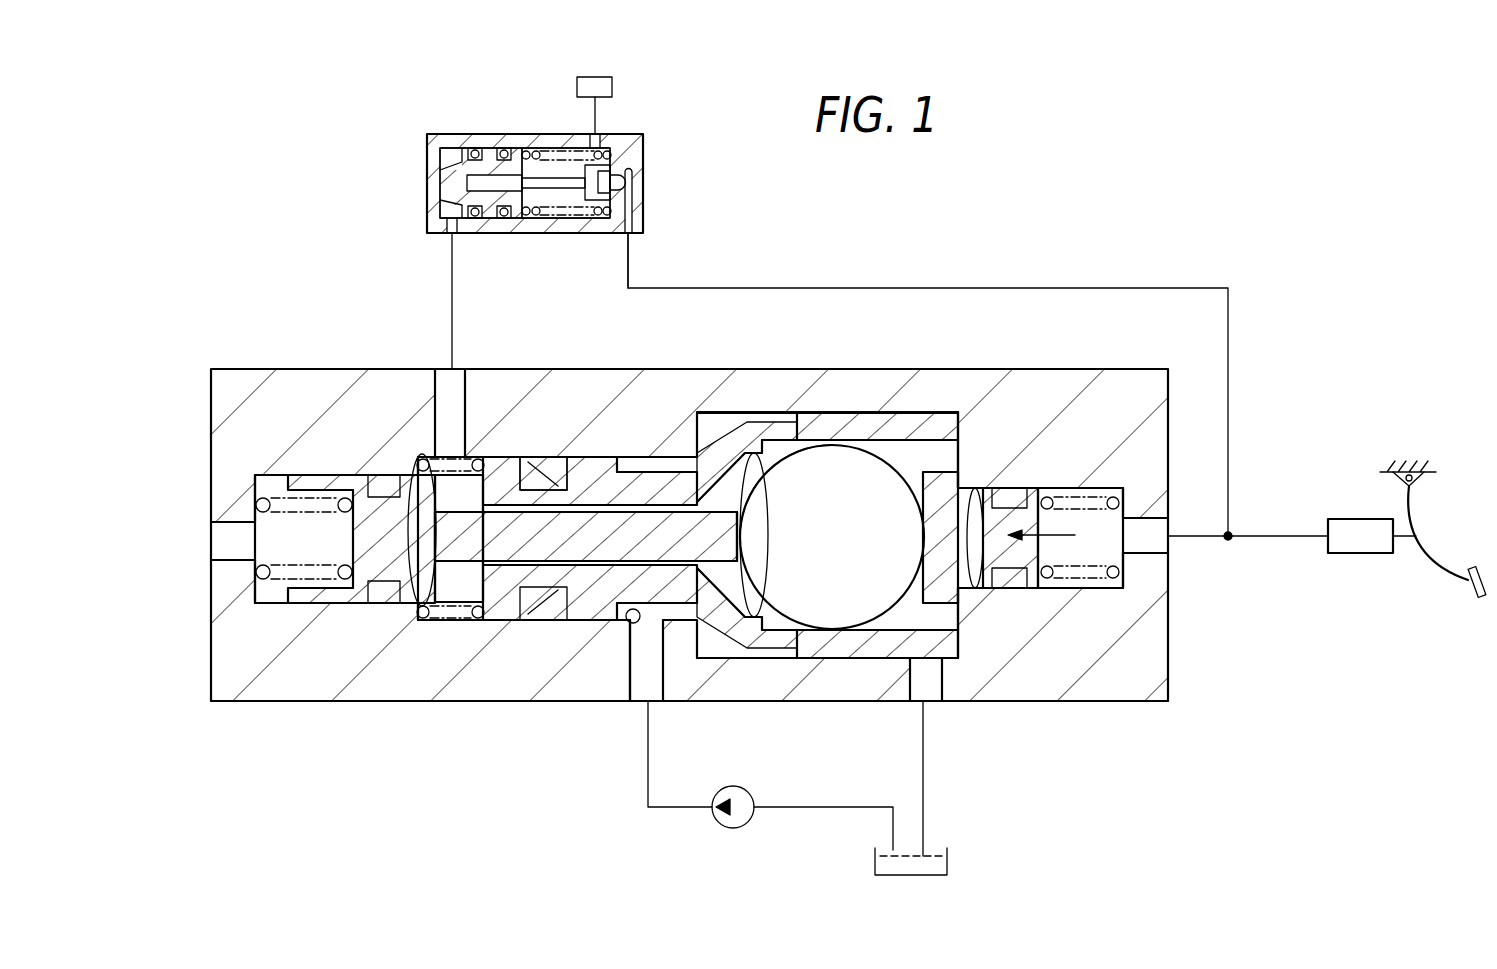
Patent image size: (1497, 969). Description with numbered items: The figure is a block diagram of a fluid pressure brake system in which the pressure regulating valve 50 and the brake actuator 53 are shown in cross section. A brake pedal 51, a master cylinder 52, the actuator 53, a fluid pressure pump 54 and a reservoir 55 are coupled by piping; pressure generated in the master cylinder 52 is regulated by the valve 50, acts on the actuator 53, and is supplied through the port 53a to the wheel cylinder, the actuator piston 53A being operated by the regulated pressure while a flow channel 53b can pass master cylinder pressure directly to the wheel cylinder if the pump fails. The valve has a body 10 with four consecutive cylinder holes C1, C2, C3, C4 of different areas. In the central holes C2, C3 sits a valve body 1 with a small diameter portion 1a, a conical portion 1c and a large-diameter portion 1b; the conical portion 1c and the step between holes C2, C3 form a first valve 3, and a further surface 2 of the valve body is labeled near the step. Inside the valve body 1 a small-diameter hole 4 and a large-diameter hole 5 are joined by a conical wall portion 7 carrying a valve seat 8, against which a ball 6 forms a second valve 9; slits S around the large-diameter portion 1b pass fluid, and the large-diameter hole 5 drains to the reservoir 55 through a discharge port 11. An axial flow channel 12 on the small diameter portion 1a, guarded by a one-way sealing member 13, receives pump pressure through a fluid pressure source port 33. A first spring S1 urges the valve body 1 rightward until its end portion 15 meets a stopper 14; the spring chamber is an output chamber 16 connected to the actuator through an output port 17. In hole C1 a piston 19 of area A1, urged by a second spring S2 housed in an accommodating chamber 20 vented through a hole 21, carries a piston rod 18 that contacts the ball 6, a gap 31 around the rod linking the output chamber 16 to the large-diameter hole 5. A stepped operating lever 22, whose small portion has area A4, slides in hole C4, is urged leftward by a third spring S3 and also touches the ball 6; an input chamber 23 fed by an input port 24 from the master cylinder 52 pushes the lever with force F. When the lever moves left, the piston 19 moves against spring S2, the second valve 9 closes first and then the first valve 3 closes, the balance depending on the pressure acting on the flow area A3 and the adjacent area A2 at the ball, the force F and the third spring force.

The valve body 1 is at (604, 464).
The small diameter portion 1a is at (580, 623).
The large-diameter portion 1b is at (780, 643).
The conical portion 1c is at (727, 660).
The conical valve surface 2 is at (672, 465).
The first valve 3 is at (697, 480).
The small-diameter hole 4 is at (507, 618).
The large-diameter hole 5 is at (897, 620).
The ball 6 is at (843, 457).
The conical wall portion 7 is at (735, 448).
The valve seat 8 is at (790, 435).
The second valve 9 is at (830, 440).
The body 10 is at (250, 673).
The discharge port 11 is at (930, 682).
The flow channel 12 is at (530, 618).
The sealing member 13 is at (545, 458).
The stopper 14 is at (978, 432).
The end portion 15 is at (977, 593).
The output chamber 16 is at (443, 617).
The output port 17 is at (443, 382).
The piston rod 18 is at (585, 458).
The piston 19 is at (405, 473).
The accommodating chamber 20 is at (270, 486).
The hole 21 is at (222, 540).
The operating lever 22 is at (963, 493).
The input chamber 23 is at (1105, 555).
The input port 24 is at (1160, 527).
The gap 31 is at (528, 617).
The fluid pressure source port 33 is at (645, 693).
The pressure regulating valve 50 is at (355, 735).
The brake pedal 51 is at (1430, 553).
The master cylinder 52 is at (1342, 553).
The brake actuator 53 is at (450, 158).
The actuator piston 53A is at (487, 155).
The port 53a is at (599, 134).
The flow channel 53b is at (629, 228).
The fluid pressure pump 54 is at (723, 828).
The reservoir 55 is at (875, 862).
The sectional area of piston A1 is at (400, 607).
The chamber A2 is at (742, 573).
The sectional area of flow channel in second valve A3 is at (768, 517).
The sectional area of small-diameter portion of operating lever A4 is at (1015, 590).
The cylinder hole C1 is at (258, 592).
The cylinder hole C2 is at (620, 618).
The cylinder hole C3 is at (845, 643).
The cylinder hole C4 is at (1093, 578).
The slits S is at (812, 613).
The first spring S1 is at (458, 462).
The second spring S2 is at (312, 497).
The third spring S3 is at (1085, 495).
The acting force F is at (1050, 537).